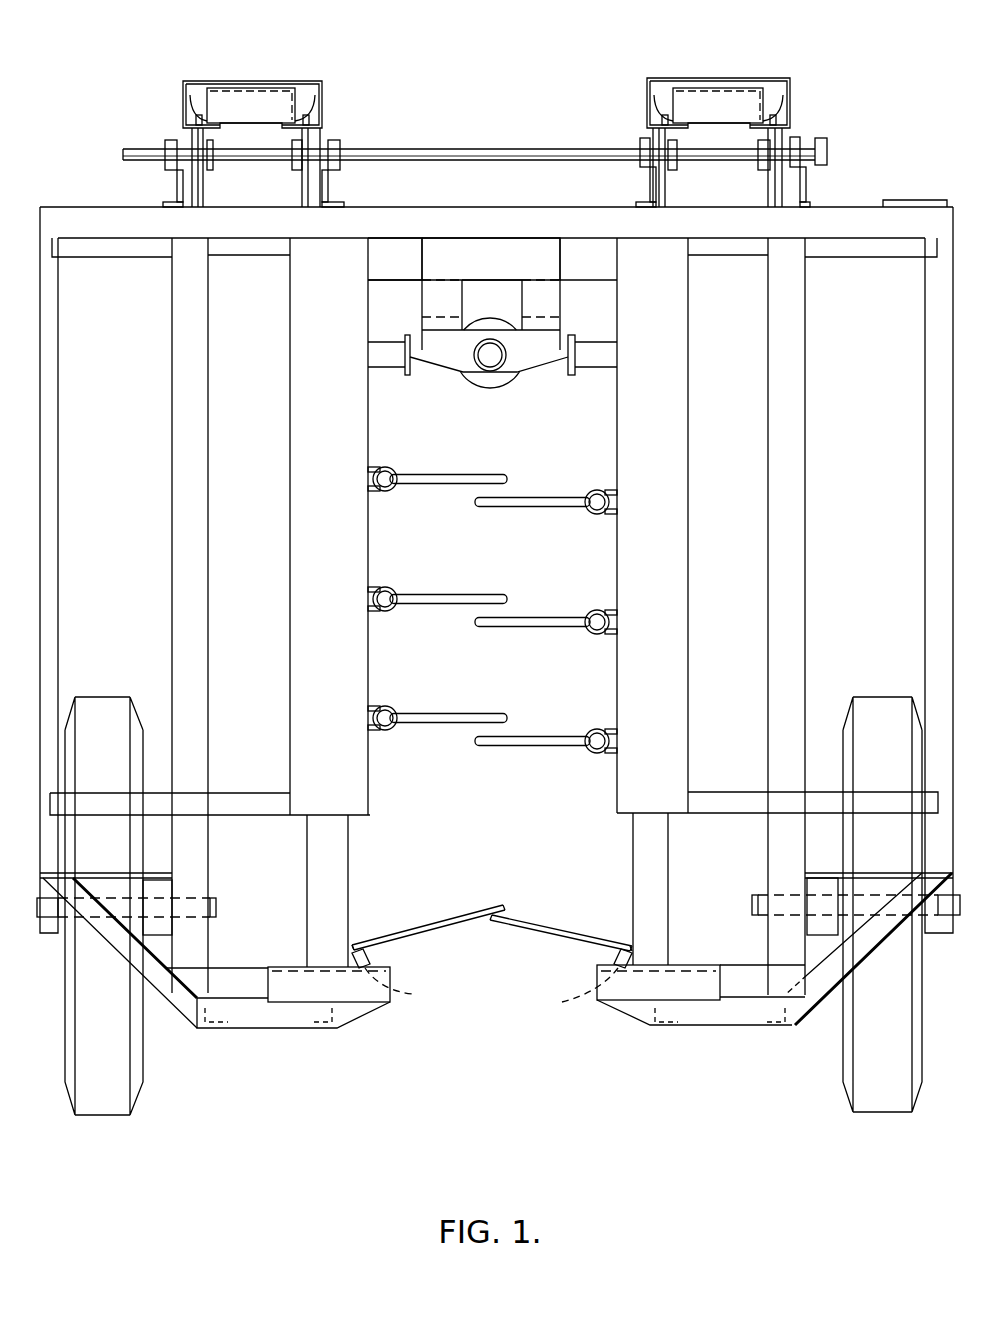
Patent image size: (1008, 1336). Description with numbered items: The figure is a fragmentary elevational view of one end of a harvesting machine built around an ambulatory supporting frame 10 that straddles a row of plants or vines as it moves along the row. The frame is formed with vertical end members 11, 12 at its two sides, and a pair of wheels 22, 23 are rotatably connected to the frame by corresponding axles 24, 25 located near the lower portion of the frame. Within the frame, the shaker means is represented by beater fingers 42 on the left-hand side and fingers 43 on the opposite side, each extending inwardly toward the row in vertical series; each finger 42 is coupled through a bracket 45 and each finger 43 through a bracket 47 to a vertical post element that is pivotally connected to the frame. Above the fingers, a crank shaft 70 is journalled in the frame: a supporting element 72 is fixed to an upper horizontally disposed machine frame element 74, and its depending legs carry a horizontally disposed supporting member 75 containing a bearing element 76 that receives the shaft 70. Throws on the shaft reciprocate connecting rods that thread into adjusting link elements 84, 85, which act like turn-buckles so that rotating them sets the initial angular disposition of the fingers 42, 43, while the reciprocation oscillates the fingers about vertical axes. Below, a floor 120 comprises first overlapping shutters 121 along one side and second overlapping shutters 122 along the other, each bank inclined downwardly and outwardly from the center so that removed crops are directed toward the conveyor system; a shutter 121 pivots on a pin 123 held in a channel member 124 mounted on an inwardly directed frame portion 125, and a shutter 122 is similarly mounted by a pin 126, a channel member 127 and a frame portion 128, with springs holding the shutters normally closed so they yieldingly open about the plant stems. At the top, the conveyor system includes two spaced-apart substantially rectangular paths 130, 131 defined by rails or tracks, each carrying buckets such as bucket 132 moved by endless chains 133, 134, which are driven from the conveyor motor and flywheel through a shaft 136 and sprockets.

The ambulatory supporting frame 10 is at (108, 202).
The vertical end member 11 is at (938, 218).
The vertical end member 12 is at (46, 222).
The wheel 22 is at (888, 1102).
The wheel 23 is at (107, 1108).
The axle 24 is at (752, 905).
The axle 25 is at (218, 906).
The fingers 42 is at (440, 476).
The fingers 43 is at (546, 498).
The bracket 45 is at (393, 492).
The bracket 47 is at (599, 513).
The crank shaft 70 is at (488, 357).
The supporting element 72 is at (500, 253).
The machine frame element 74 is at (402, 253).
The supporting member 75 is at (443, 348).
The bearing element 76 is at (510, 362).
The adjusting link element 84 is at (385, 380).
The adjusting link element 85 is at (598, 360).
The floor 120 is at (399, 936).
The first overlapping shutters 121 is at (455, 920).
The second overlapping shutters 122 is at (535, 918).
The pin 123 is at (372, 958).
The channel member 124 is at (411, 988).
The inwardly directed portion of the machine frame 125 is at (350, 985).
The pin 126 is at (613, 958).
The channel member 127 is at (568, 992).
The frame portion 128 is at (628, 980).
The conveyor path 130 is at (225, 76).
The conveyor path 131 is at (700, 76).
The bucket 132 is at (262, 107).
The endless chain 133 is at (185, 98).
The endless chain 134 is at (318, 98).
The shaft 136 is at (500, 147).